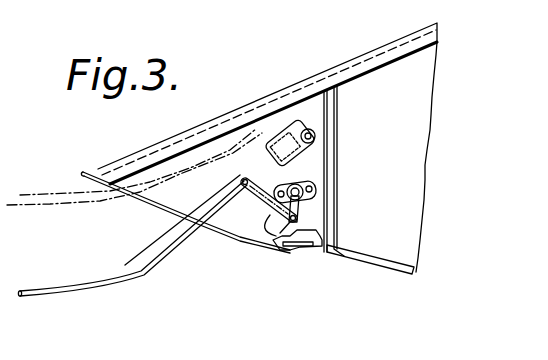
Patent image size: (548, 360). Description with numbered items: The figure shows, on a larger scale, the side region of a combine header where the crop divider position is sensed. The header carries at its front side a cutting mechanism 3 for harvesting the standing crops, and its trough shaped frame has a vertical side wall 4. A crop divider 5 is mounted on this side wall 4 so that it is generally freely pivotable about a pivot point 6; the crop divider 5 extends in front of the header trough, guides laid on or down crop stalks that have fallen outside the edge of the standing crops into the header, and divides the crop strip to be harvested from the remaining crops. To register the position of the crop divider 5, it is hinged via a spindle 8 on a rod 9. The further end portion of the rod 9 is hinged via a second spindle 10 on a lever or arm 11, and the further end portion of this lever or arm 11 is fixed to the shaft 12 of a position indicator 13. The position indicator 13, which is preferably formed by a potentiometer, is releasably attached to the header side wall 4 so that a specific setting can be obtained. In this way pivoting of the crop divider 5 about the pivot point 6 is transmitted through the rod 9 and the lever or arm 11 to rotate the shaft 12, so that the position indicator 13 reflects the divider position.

The cutting mechanism 3 is at (297, 250).
The side wall 4 is at (430, 179).
The crop divider 5 is at (97, 287).
The pivot point 6 is at (312, 135).
The spindle 8 is at (236, 224).
The rod 9 is at (232, 196).
The spindle 10 is at (268, 216).
The lever or arm 11 is at (300, 214).
The shaft 12 is at (303, 172).
The position indicator 13 is at (312, 184).